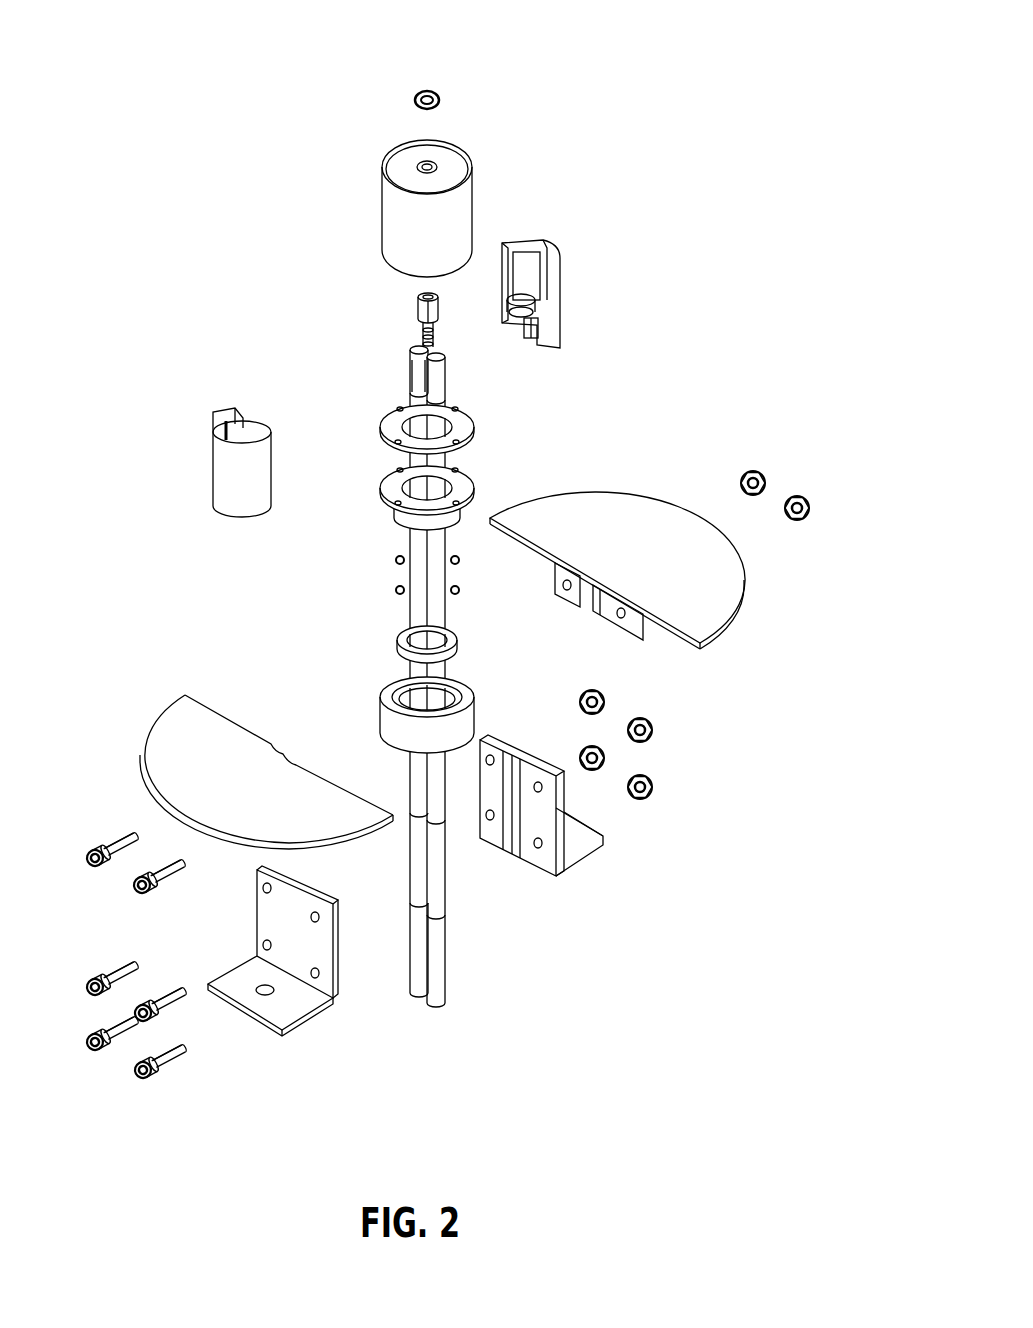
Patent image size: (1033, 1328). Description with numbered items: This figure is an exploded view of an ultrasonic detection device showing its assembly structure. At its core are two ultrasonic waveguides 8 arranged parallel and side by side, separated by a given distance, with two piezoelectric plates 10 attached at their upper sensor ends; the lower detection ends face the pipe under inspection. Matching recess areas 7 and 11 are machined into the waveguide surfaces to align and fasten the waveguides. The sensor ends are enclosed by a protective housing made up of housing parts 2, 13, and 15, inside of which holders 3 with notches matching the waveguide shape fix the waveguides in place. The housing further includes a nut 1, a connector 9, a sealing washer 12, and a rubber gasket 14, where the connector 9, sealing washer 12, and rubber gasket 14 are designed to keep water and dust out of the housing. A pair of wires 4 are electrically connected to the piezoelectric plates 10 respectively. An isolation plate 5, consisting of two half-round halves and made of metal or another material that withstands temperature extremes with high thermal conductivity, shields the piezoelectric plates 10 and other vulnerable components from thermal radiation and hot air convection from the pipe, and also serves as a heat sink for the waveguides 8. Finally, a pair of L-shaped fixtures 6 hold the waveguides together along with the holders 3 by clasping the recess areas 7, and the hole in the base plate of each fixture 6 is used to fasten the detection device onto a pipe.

The nut 1 is at (447, 95).
The housing part 2 is at (478, 210).
The holder 3 is at (565, 297).
The wires 4 is at (447, 340).
The isolation plate 5 is at (613, 490).
The L-shaped fixture 6 is at (587, 863).
The recess area 7 is at (450, 885).
The ultrasonic waveguide 8 is at (450, 965).
The connector 9 is at (410, 297).
The piezoelectric plate 10 is at (403, 340).
The recess area 11 is at (400, 382).
The sealing washer 12 is at (378, 430).
The housing part 13 is at (372, 505).
The rubber gasket 14 is at (392, 645).
The housing part 15 is at (382, 720).